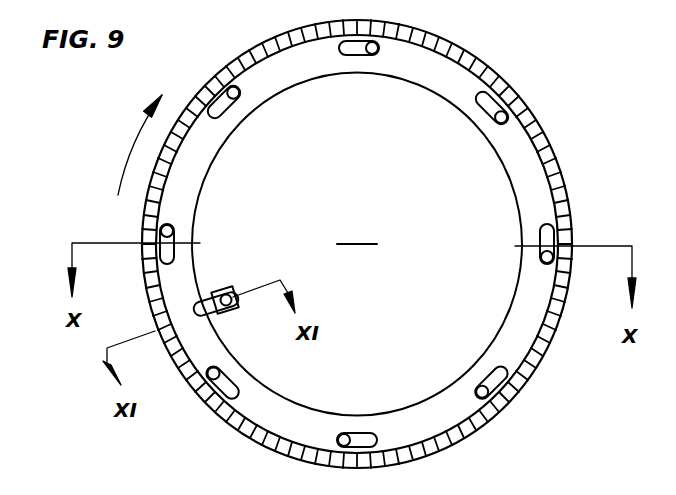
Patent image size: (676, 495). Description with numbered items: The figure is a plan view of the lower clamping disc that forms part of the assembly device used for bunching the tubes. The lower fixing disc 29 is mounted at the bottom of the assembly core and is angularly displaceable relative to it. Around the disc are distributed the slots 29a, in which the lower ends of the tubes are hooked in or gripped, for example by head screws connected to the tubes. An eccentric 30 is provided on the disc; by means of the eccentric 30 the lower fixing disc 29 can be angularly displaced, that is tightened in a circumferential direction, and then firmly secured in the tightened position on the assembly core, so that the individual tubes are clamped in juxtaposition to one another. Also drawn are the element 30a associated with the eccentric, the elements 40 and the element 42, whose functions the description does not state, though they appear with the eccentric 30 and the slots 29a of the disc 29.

The lower fixing disc 29 is at (508, 346).
The slots 29a is at (148, 226).
The eccentric 30 is at (237, 314).
The slot hole 30a is at (211, 317).
The slots 40 is at (486, 367).
The block 42 is at (200, 301).